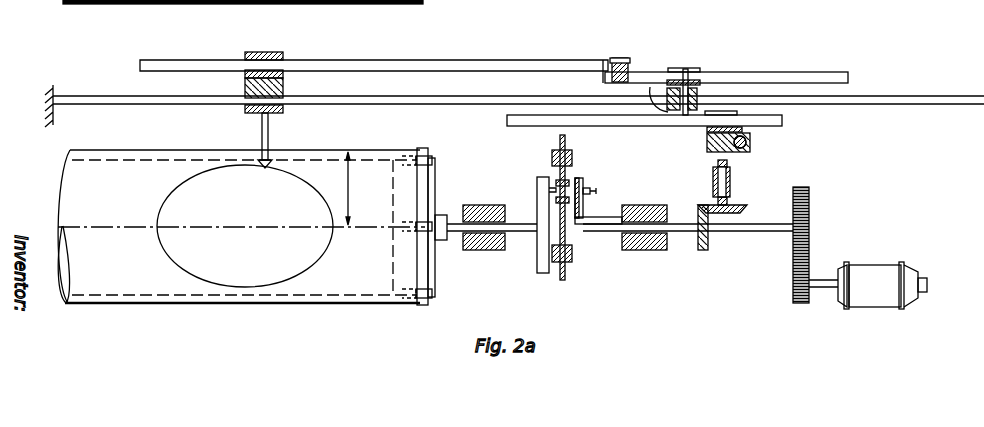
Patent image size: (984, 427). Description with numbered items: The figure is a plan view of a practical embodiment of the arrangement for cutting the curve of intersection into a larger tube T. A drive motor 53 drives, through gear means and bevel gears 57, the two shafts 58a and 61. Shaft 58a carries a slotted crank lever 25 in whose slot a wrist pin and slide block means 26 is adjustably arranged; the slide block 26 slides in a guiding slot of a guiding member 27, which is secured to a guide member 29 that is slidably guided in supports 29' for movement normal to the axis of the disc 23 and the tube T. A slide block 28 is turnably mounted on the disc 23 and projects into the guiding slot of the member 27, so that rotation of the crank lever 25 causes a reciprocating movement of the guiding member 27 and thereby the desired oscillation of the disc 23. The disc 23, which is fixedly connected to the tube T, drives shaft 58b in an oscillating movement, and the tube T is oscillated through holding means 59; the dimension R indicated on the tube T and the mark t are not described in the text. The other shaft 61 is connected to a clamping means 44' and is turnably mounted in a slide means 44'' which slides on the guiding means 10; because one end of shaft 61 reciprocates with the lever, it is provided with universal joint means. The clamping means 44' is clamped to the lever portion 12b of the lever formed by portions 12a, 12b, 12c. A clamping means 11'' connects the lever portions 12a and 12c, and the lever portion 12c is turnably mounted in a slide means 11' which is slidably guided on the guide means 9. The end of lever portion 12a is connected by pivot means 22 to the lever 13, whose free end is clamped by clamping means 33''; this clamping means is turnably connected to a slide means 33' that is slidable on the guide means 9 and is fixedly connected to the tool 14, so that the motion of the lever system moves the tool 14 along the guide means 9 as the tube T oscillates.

The guide means 9 is at (941, 96).
The guiding means 10 is at (707, 143).
The slide means 11' is at (701, 92).
The clamping means 11'' is at (693, 59).
The lever portion 12a is at (650, 77).
The lever portion 12b is at (655, 126).
The lever portion 12c is at (657, 88).
The lever 13 is at (569, 62).
The tool 14 is at (258, 160).
The pivot means 22 is at (620, 57).
The disc 23 is at (541, 265).
The slotted crank lever 25 is at (581, 213).
The wrist pin and slide block means 26 is at (577, 190).
The guiding member 27 is at (557, 199).
The slide block 28 is at (549, 180).
The guide member 29 is at (580, 211).
The supports 29' is at (582, 256).
The slide means 33' is at (283, 87).
The clamping means 33'' is at (239, 82).
The clamping means 44' is at (770, 139).
The slide means 44'' is at (761, 160).
The drive motor 53 is at (886, 278).
The bevel gears 57 is at (709, 248).
The shaft 58a is at (678, 232).
The shaft 58b is at (520, 232).
The holding means 59 is at (433, 270).
The shaft 61 is at (730, 200).
The radius R is at (348, 188).
The tube T is at (380, 300).
The bar t is at (366, 0).